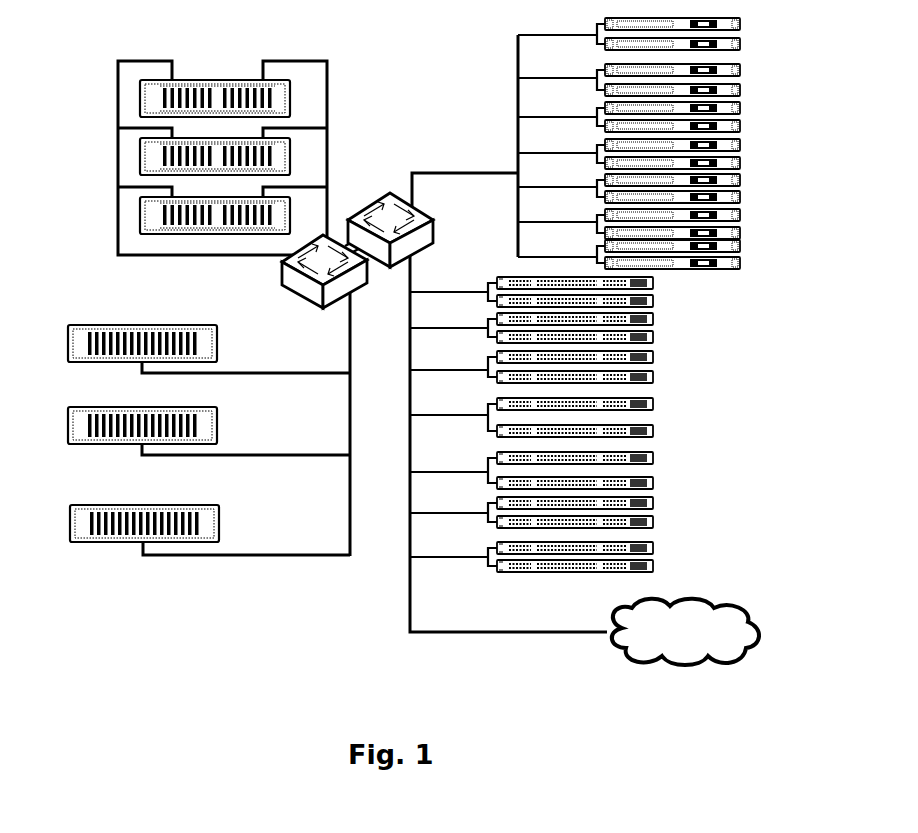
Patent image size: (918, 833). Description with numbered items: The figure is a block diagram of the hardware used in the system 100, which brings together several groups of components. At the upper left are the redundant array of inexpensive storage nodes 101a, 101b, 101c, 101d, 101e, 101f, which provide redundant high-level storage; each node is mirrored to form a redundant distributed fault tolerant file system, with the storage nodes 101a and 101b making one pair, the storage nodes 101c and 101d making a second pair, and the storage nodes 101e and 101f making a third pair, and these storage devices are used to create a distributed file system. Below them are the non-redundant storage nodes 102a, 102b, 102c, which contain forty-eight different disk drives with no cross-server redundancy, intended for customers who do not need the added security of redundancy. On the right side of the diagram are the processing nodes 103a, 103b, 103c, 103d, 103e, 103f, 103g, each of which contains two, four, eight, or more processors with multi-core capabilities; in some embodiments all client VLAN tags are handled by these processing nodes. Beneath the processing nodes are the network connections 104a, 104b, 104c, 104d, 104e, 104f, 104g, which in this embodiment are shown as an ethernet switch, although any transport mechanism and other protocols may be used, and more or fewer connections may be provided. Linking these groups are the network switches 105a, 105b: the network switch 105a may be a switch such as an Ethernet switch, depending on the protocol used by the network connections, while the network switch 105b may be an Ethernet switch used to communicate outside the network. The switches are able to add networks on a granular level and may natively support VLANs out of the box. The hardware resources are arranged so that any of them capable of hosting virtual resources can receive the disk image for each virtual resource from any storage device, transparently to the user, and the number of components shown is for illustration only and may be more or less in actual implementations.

The system 100 is at (55, 40).
The redundant array of inexpensive storage node 101a is at (215, 90).
The redundant array of inexpensive storage node 101b is at (252, 90).
The redundant array of inexpensive storage node 101c is at (215, 148).
The redundant array of inexpensive storage node 101d is at (252, 148).
The redundant array of inexpensive storage node 101e is at (215, 207).
The redundant array of inexpensive storage node 101f is at (252, 207).
The non-redundant storage node 102a is at (142, 336).
The non-redundant storage node 102b is at (142, 418).
The non-redundant storage node 102c is at (144, 516).
The processing node 103a is at (640, 33).
The processing node 103b is at (640, 78).
The processing node 103c is at (640, 115).
The processing node 103d is at (640, 152).
The processing node 103e is at (640, 187).
The processing node 103f is at (640, 222).
The processing node 103g is at (640, 254).
The network connection 104a is at (544, 289).
The network connection 104b is at (544, 326).
The network connection 104c is at (544, 367).
The network connection 104d is at (544, 416).
The network connection 104e is at (544, 470).
The network connection 104f is at (544, 511).
The network connection 104g is at (544, 555).
The network switch 105a is at (324, 286).
The network switch 105b is at (390, 223).